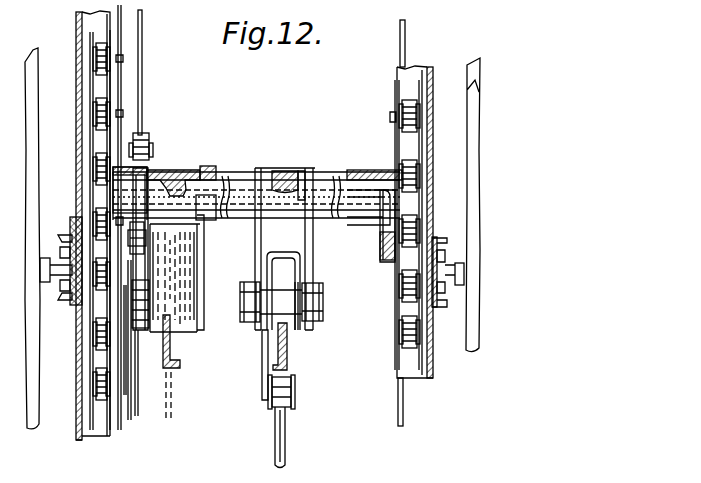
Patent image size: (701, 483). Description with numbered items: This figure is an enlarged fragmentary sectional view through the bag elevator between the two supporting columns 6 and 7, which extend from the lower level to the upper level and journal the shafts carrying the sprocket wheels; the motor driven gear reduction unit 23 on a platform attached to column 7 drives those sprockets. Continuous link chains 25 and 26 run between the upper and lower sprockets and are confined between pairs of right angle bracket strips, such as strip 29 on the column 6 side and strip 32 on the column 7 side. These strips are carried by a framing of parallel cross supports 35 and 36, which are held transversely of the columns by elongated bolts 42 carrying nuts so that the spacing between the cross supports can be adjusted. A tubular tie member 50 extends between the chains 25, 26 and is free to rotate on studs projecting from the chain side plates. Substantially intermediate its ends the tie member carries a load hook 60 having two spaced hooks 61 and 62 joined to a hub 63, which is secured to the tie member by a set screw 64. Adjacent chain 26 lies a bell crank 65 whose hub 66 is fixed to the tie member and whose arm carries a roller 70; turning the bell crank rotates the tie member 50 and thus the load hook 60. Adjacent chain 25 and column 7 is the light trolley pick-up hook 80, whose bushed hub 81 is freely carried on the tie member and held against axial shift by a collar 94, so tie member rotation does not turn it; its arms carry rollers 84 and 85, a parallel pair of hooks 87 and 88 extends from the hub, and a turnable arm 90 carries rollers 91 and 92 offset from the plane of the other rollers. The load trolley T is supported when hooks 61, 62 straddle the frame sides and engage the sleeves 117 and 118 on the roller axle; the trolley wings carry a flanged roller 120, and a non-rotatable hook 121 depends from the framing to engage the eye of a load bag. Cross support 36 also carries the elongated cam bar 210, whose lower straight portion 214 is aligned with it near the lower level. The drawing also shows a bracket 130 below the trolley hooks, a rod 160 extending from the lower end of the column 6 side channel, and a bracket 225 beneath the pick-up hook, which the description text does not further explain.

The supporting column 6 is at (473, 193).
The supporting column 7 is at (21, 238).
The motor driven gear reduction unit 23 is at (243, 479).
The link chain 25 is at (95, 352).
The link chain 26 is at (400, 306).
The right angle bracket strip 29 is at (418, 370).
The right angle bracket strip 32 is at (91, 437).
The cross support 35 is at (436, 237).
The cross support 36 is at (74, 225).
The elongated bolt 42 is at (52, 258).
The tubular tie member 50 is at (224, 186).
The load hook 60 is at (251, 340).
The hook 61 is at (262, 340).
The hook 62 is at (302, 325).
The hub 63 is at (303, 180).
The set screw 64 is at (285, 172).
The bell crank 65 is at (375, 246).
The hub 66 is at (352, 230).
The roller 70 is at (392, 266).
The light trolley pick-up hook 80 is at (198, 302).
The hub 81 is at (180, 170).
The roller 84 is at (145, 242).
The roller 85 is at (143, 135).
The hook 87 is at (150, 304).
The hook 88 is at (199, 294).
The turnable arm 90 is at (129, 360).
The roller 91 is at (131, 412).
The roller 92 is at (108, 300).
The collar 94 is at (212, 166).
The sleeve 117 is at (318, 290).
The sleeve 118 is at (211, 278).
The flanged roller 120 is at (294, 400).
The hook 121 is at (286, 442).
The bracket 130 is at (290, 356).
The rod 160 is at (397, 404).
The cam bar 210 is at (143, 82).
The straight cam bar portion 214 is at (136, 417).
The bracket 225 is at (173, 372).
The load trolley T is at (182, 272).